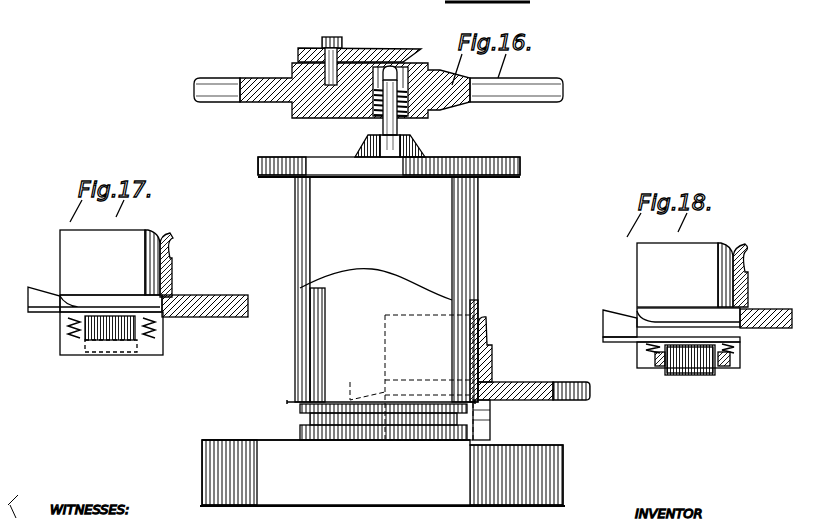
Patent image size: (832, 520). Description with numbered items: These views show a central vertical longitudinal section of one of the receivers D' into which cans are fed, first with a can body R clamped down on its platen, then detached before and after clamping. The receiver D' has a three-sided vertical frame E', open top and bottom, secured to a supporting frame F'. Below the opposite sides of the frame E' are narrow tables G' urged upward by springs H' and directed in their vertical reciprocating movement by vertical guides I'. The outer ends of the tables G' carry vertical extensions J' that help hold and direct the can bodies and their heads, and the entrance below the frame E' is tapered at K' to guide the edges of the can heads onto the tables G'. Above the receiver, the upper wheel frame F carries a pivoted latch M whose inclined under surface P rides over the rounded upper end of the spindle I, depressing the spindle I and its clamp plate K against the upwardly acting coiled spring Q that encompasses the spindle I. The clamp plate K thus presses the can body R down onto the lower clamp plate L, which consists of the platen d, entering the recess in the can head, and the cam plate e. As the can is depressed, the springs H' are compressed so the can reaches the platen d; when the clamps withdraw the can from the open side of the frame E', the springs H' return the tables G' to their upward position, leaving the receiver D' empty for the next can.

In FIG. 16, the upper wheel frame F is at (378, 87).
In FIG. 16, the inclined surface P is at (410, 58).
In FIG. 16, the latch M is at (349, 57).
In FIG. 16, the coiled spring Q is at (409, 106).
In FIG. 16, the spindle I is at (364, 108).
In FIG. 16, the clamp plate K is at (389, 156).
In FIG. 16, the can body R is at (386, 308).
In FIG. 16, the receiver D' is at (485, 344).
In FIG. 17, the receiver D' is at (181, 259).
In FIG. 18, the receiver D' is at (737, 265).
In FIG. 16, the three-sided vertical frame E' is at (499, 347).
In FIG. 17, the three-sided vertical frame E' is at (110, 262).
In FIG. 18, the three-sided vertical frame E' is at (685, 275).
In FIG. 16, the supporting frame F' is at (534, 379).
In FIG. 17, the supporting frame F' is at (205, 295).
In FIG. 18, the supporting frame F' is at (766, 307).
In FIG. 16, the table G' is at (496, 420).
In FIG. 17, the table G' is at (110, 306).
In FIG. 18, the table G' is at (719, 358).
In FIG. 16, the platen d is at (300, 432).
In FIG. 16, the clamp plate L is at (336, 429).
In FIG. 16, the cam plate e is at (382, 473).
In FIG. 17, the vertical extension J' is at (32, 299).
In FIG. 18, the vertical extension J' is at (620, 323).
In FIG. 17, the tapered entrance K' is at (95, 293).
In FIG. 18, the tapered entrance K' is at (671, 314).
In FIG. 17, the spring H' is at (110, 333).
In FIG. 18, the spring H' is at (673, 355).
In FIG. 17, the vertical guide I' is at (111, 360).
In FIG. 18, the vertical guide I' is at (690, 373).